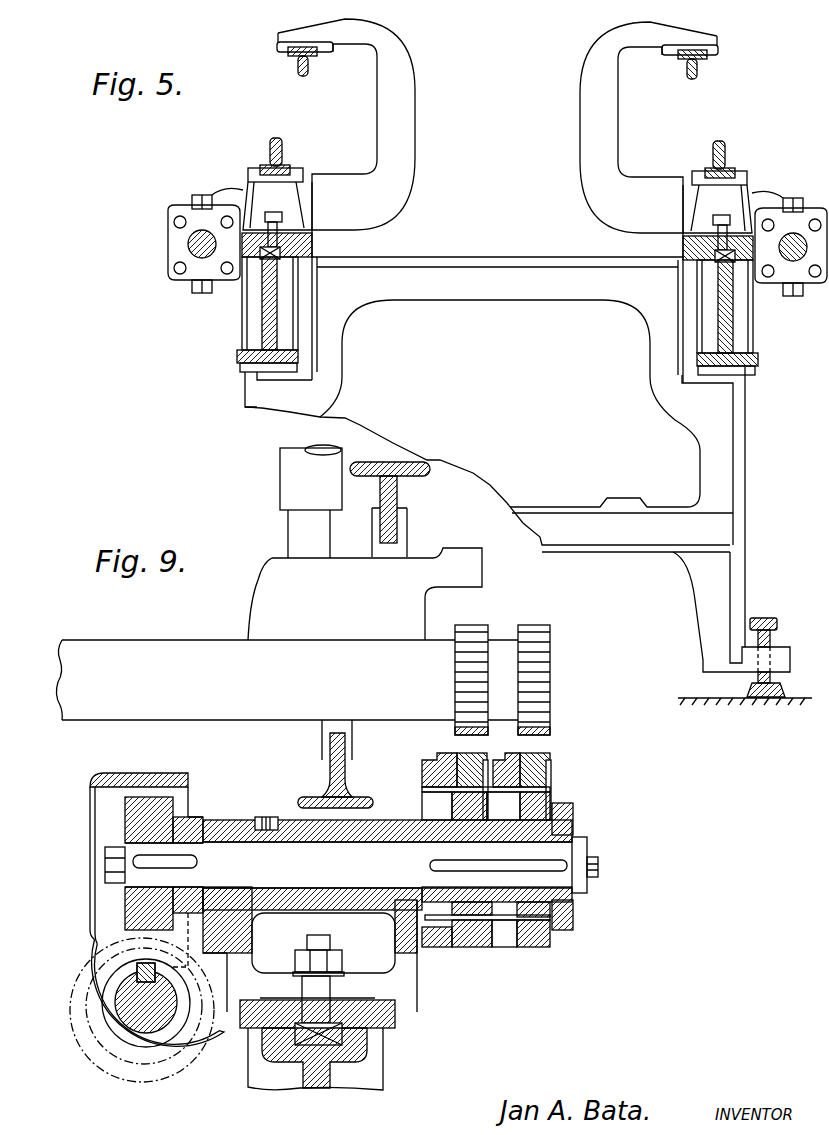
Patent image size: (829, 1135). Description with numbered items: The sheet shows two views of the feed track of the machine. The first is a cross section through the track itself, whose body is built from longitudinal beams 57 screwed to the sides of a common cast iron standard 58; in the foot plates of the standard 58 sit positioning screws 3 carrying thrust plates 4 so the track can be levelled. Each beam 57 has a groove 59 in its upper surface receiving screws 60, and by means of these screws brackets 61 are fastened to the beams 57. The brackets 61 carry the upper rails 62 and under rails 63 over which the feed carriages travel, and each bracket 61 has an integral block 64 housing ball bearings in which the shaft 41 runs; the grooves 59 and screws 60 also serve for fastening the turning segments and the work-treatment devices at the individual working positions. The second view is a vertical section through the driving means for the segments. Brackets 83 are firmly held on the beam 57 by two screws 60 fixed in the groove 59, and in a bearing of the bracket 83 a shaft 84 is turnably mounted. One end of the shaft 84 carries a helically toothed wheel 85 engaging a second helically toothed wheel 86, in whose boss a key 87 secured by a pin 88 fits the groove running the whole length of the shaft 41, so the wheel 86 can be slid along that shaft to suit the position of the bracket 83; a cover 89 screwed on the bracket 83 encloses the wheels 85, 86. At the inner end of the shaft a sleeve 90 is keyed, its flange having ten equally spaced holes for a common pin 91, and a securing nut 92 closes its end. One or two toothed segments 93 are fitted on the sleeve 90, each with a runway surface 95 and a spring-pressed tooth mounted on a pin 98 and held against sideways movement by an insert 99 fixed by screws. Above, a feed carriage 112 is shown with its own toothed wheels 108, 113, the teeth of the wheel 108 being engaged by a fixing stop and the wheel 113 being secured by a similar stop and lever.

In FIG. 5, the positioning screws 3 is at (766, 627).
In FIG. 5, the thrust plates 4 is at (750, 693).
In FIG. 5, the shaft 41 is at (197, 257).
In FIG. 9, the shaft 41 is at (152, 1000).
In FIG. 5, the longitudinal beams 57 is at (258, 358).
In FIG. 9, the longitudinal beams 57 is at (350, 1080).
In FIG. 5, the cast iron standard 58 is at (637, 530).
In FIG. 5, the groove 59 is at (303, 253).
In FIG. 9, the groove 59 is at (345, 1040).
In FIG. 5, the screws 60 is at (280, 228).
In FIG. 9, the screws 60 is at (323, 1007).
In FIG. 5, the brackets 61 is at (400, 143).
In FIG. 5, the upper rails 62 is at (297, 75).
In FIG. 9, the upper rails 62 is at (412, 470).
In FIG. 5, the under rails 63 is at (270, 143).
In FIG. 9, the under rails 63 is at (347, 797).
In FIG. 5, the block 64 is at (220, 200).
In FIG. 9, the brackets 83 is at (225, 830).
In FIG. 9, the shaft 84 is at (288, 857).
In FIG. 9, the helically toothed wheel 85 is at (163, 823).
In FIG. 9, the helically toothed wheel 86 is at (113, 1083).
In FIG. 9, the key 87 is at (132, 1000).
In FIG. 9, the pin 88 is at (140, 967).
In FIG. 9, the cover 89 is at (90, 817).
In FIG. 9, the sleeve 90 is at (433, 813).
In FIG. 9, the pin 91 is at (460, 922).
In FIG. 9, the securing nut 92 is at (570, 920).
In FIG. 9, the toothed segments 93 is at (480, 937).
In FIG. 9, the runway surface 95 is at (437, 762).
In FIG. 9, the pin 98 is at (550, 767).
In FIG. 9, the insert 99 is at (523, 792).
In FIG. 9, the toothed wheel 108 is at (540, 630).
In FIG. 9, the feed carriage 112 is at (423, 665).
In FIG. 9, the toothed wheel 113 is at (472, 647).